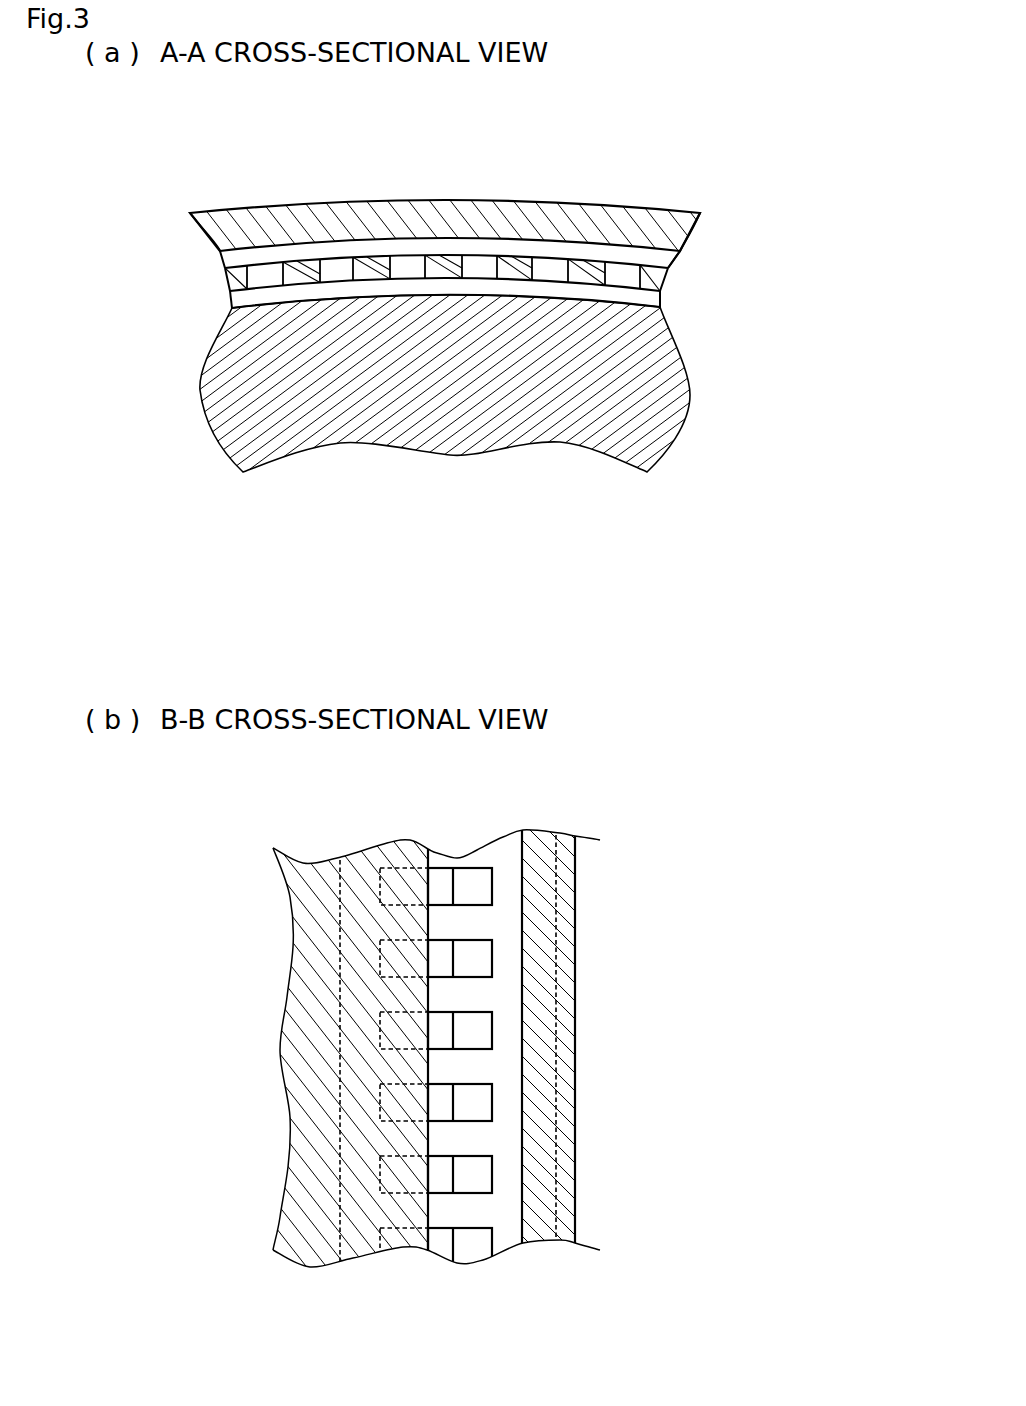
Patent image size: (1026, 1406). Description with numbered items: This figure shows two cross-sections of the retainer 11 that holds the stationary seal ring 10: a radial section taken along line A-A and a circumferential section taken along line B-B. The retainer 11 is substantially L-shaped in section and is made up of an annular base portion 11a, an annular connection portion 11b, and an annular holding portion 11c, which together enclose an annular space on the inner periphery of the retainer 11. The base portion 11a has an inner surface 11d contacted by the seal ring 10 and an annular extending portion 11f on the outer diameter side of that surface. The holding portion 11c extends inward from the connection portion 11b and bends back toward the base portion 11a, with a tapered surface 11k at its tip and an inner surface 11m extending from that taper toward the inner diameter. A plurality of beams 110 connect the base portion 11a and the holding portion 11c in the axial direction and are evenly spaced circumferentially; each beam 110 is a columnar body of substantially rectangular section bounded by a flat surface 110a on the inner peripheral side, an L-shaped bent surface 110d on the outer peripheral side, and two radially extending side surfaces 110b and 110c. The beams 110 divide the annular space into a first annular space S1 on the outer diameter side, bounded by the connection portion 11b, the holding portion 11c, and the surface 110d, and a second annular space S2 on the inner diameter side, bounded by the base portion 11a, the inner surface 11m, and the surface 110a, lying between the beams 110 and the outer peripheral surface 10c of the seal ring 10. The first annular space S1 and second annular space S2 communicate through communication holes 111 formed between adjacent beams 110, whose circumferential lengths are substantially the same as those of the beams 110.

The stationary seal ring 10 is at (300, 462).
The outer peripheral surface of the stationary seal ring 10c is at (232, 279).
The retainer 11 is at (312, 198).
The base portion 11a is at (312, 1132).
The annular connection portion 11b is at (620, 222).
The annular holding portion 11c is at (560, 1120).
The inner surface 11d is at (340, 1258).
The annular extending portion 11f is at (374, 1050).
The tapered surface 11k is at (548, 268).
The inner surface of the annular holding portion 11m is at (653, 300).
The beam 110 is at (297, 270).
The surface on the inner peripheral side 110a is at (447, 268).
The side surface 110b is at (480, 283).
The side surface 110c is at (412, 262).
The surface on the outer peripheral side 110d is at (455, 262).
The communication hole 111 is at (446, 766).
The first annular space S1 is at (657, 261).
The second annular space S2 is at (516, 801).